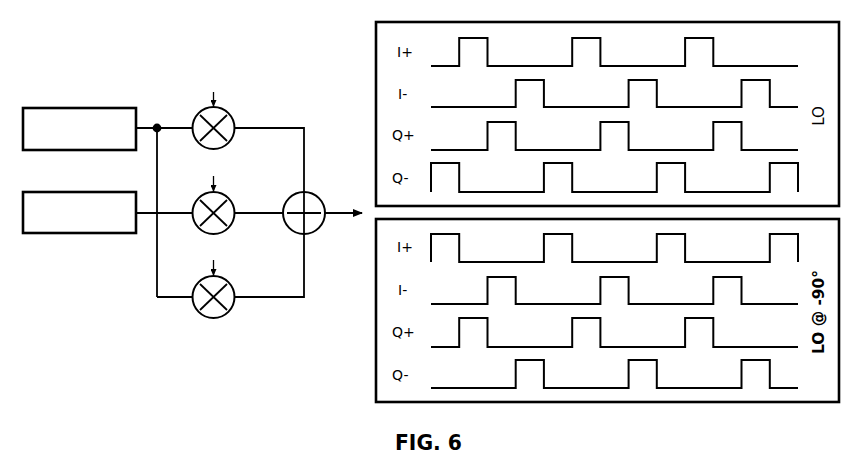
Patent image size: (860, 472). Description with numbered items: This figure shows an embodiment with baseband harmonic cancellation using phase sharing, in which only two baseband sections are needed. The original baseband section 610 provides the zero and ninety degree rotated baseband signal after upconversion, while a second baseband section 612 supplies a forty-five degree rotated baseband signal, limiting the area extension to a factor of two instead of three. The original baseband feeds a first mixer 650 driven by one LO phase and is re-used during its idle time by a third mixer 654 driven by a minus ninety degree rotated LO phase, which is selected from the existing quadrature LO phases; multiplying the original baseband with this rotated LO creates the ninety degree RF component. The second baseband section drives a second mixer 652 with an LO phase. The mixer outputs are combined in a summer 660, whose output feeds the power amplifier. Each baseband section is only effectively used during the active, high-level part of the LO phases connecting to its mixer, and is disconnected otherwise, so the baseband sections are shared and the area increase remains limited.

The baseband signal source (BB) 610 is at (86, 105).
The scaled phase-shifted baseband signal source (√2BB @ 45°) 612 is at (95, 190).
The first mixer 650 is at (228, 110).
The second mixer 652 is at (228, 195).
The third mixer 654 is at (225, 314).
The summer / combiner 660 is at (325, 200).